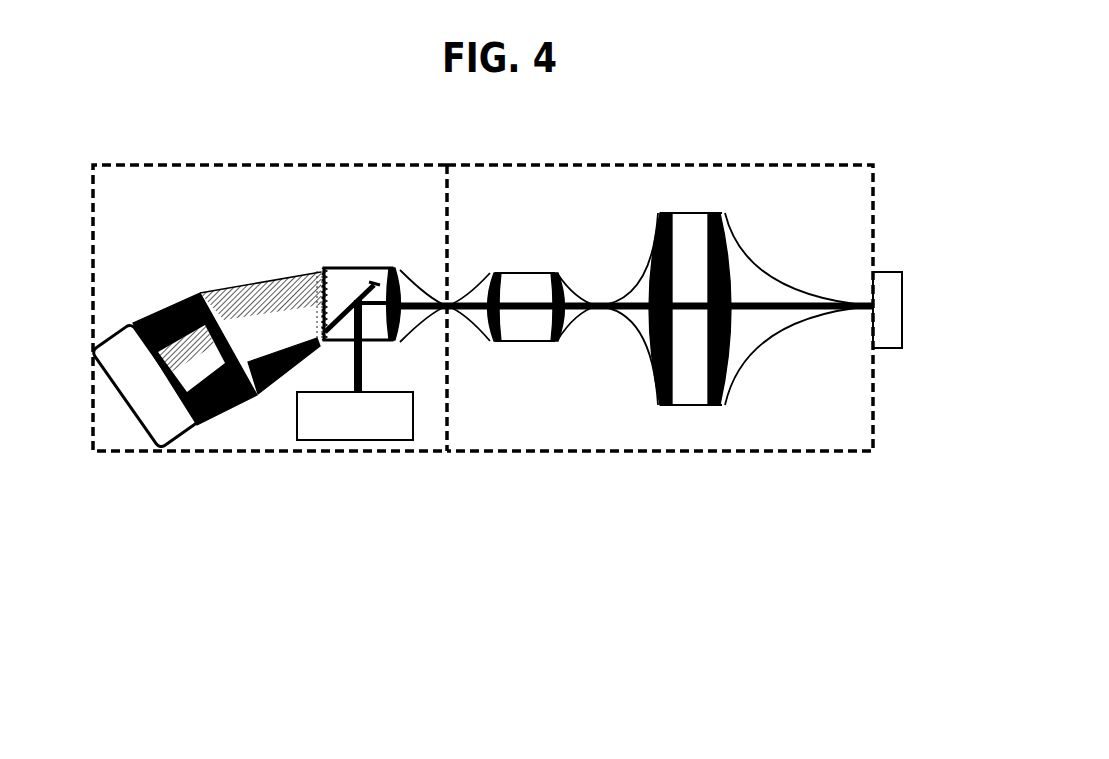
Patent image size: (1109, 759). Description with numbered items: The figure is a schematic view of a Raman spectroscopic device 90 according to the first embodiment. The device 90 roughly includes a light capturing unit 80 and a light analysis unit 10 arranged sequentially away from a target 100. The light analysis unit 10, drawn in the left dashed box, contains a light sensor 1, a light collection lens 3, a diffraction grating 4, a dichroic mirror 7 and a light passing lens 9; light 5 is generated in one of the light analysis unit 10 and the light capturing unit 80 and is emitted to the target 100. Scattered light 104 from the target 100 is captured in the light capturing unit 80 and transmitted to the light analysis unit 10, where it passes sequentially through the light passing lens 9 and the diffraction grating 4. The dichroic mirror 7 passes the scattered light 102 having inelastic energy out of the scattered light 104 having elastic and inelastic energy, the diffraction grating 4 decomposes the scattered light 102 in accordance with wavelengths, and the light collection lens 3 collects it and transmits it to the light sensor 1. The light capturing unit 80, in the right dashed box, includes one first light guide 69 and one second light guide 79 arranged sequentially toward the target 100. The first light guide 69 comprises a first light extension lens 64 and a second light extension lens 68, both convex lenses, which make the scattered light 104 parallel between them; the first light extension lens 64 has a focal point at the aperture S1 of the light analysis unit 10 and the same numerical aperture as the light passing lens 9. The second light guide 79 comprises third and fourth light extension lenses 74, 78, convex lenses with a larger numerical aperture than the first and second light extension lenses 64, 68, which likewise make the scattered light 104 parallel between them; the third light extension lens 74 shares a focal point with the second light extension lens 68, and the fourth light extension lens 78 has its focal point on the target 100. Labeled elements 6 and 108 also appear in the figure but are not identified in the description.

The light sensor 1 is at (177, 438).
The light collection lens 3 is at (195, 295).
The diffraction grating 4 is at (320, 270).
The light 5 is at (352, 355).
The mirror drive unit 6 is at (363, 442).
The dichroic mirror 7 is at (375, 284).
The light passing lens 9 is at (404, 318).
The light analysis unit 10 is at (93, 412).
The first light extension lens 64 is at (503, 283).
The second light extension lens 68 is at (549, 322).
The first light guide 69 is at (327, 647).
The third light extension lens 74 is at (672, 252).
The fourth light extension lens 78 is at (710, 375).
The second light guide 79 is at (512, 647).
The light capturing unit 80 is at (797, 455).
The Raman spectroscopic device 90 is at (697, 652).
The target 100 is at (893, 318).
The scattered light 102 is at (342, 267).
The scattered light 104 is at (770, 273).
The light shield 108 is at (275, 373).
The aperture S1 is at (451, 312).